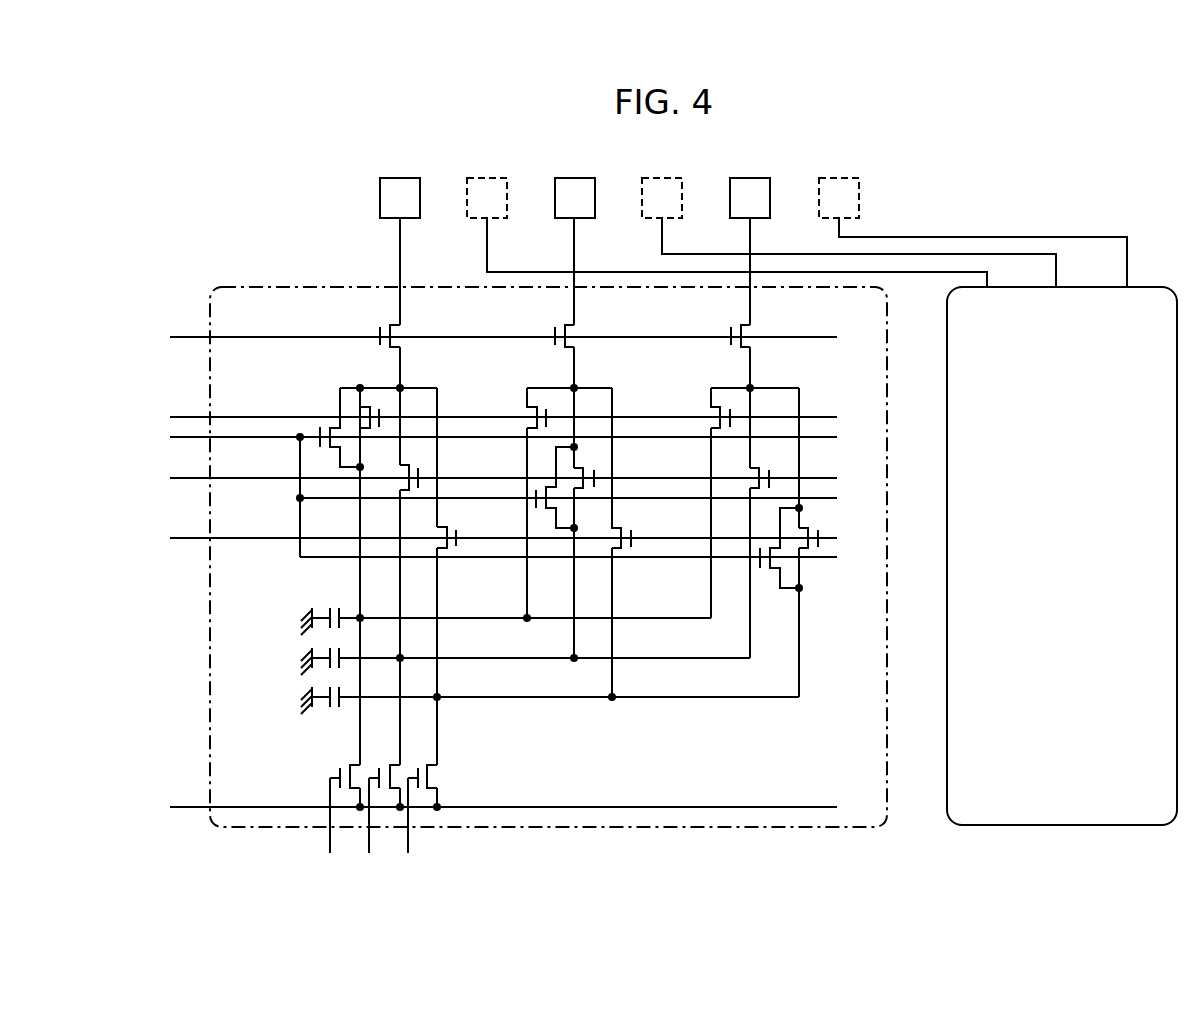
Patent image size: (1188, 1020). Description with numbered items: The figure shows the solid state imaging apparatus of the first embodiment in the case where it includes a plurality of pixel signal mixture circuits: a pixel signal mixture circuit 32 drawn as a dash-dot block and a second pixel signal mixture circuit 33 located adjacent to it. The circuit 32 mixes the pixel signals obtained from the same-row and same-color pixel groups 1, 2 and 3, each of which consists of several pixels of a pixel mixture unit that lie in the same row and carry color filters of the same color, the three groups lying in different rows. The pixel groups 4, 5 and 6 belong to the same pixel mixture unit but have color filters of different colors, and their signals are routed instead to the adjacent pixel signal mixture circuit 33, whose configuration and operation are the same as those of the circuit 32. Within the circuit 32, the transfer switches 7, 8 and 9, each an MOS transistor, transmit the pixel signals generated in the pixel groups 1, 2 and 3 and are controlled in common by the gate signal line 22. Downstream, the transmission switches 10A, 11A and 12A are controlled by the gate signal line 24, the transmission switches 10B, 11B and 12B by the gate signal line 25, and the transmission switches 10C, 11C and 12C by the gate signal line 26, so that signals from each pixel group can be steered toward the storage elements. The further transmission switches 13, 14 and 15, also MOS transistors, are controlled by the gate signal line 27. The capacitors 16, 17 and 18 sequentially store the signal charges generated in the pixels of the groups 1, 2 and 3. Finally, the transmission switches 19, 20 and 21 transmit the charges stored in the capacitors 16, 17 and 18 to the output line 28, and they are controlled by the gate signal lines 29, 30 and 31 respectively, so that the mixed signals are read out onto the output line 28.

The same-row and same-color pixel group 1 is at (402, 176).
The same-row and same-color pixel group 2 is at (577, 176).
The same-row and same-color pixel group 3 is at (752, 176).
The pixel group 4 is at (489, 176).
The pixel group 5 is at (664, 176).
The pixel group 6 is at (842, 176).
The transfer switch 7 is at (390, 326).
The transfer switch 8 is at (565, 326).
The transfer switch 9 is at (741, 326).
The transmission switch 10A is at (370, 408).
The transmission switch 10B is at (409, 468).
The transmission switch 10C is at (447, 528).
The transmission switch 11A is at (537, 410).
The transmission switch 11B is at (583, 478).
The transmission switch 11C is at (621, 540).
The transmission switch 12A is at (720, 410).
The transmission switch 12B is at (759, 478).
The transmission switch 12C is at (808, 540).
The transmission switch 13 is at (335, 448).
The transmission switch 14 is at (546, 512).
The transmission switch 15 is at (773, 568).
The capacitor 16 is at (330, 610).
The capacitor 17 is at (330, 650).
The capacitor 18 is at (330, 690).
The transmission switch 19 is at (355, 764).
The transmission switch 20 is at (394, 764).
The transmission switch 21 is at (433, 764).
The gate signal line 22 is at (190, 337).
The gate signal line 24 is at (190, 417).
The gate signal line 25 is at (190, 478).
The gate signal line 26 is at (190, 538).
The gate signal line 27 is at (190, 437).
The output line 28 is at (190, 807).
The gate signal line 29 is at (330, 838).
The gate signal line 30 is at (369, 838).
The gate signal line 31 is at (408, 838).
The pixel signal mixture circuit 32 is at (262, 287).
The pixel signal mixture circuit 33 is at (1150, 287).